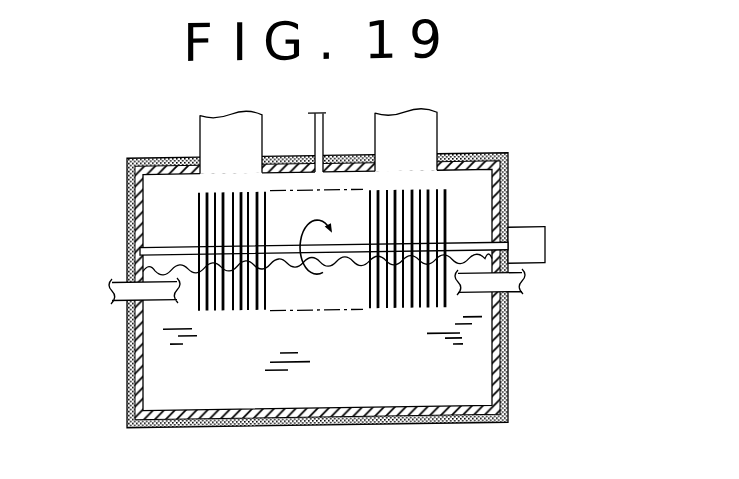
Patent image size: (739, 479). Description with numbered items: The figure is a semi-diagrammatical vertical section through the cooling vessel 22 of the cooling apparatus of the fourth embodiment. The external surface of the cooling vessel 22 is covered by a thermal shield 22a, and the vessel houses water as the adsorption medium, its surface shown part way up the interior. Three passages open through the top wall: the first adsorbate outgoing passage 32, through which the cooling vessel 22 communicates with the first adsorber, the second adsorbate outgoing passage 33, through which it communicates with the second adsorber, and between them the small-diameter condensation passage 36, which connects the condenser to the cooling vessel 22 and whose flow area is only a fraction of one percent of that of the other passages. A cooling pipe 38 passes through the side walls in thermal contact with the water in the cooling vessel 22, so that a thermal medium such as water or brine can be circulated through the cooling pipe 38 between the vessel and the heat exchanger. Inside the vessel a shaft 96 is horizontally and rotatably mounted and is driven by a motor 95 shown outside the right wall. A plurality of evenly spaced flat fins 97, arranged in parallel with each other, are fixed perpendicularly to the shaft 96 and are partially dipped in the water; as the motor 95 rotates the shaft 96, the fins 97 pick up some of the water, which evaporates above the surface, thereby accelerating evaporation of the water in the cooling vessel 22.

The cooling vessel 22 is at (273, 263).
The thermal shield 22a is at (128, 365).
The first adsorbate outgoing passage 32 is at (245, 139).
The condensation passage 36 is at (322, 146).
The second adsorbate outgoing passage 33 is at (423, 138).
The shaft 96 is at (173, 245).
The flat fins 97 is at (448, 207).
The motor 95 is at (525, 237).
The cooling pipe 38 is at (510, 296).